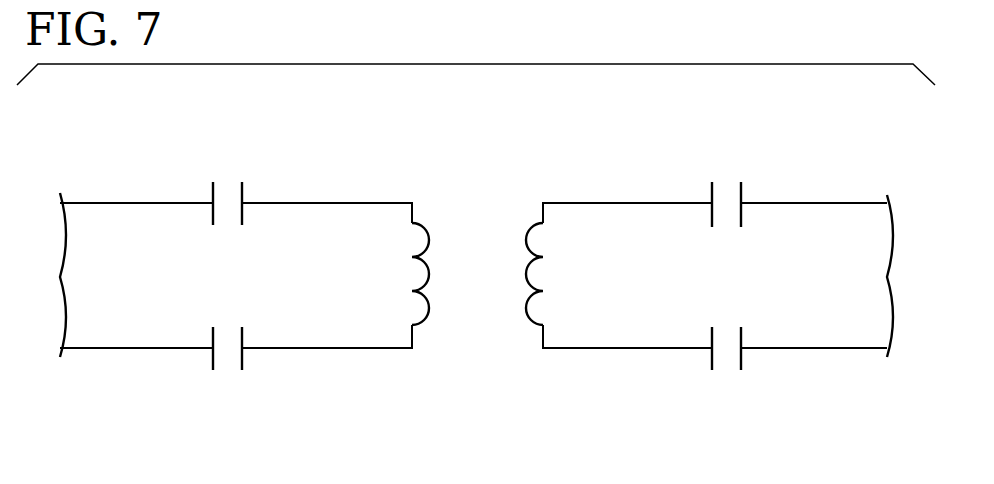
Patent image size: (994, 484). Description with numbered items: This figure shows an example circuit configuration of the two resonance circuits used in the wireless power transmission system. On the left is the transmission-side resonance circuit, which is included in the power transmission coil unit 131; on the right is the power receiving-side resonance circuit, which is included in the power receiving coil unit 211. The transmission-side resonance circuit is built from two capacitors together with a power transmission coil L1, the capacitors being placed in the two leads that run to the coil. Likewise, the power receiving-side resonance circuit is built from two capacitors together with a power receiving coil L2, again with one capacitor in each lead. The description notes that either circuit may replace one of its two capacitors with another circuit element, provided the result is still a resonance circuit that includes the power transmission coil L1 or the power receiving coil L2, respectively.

The power transmission coil unit 131 is at (303, 178).
The power receiving coil unit 211 is at (801, 178).
The power transmission coil L1 is at (400, 274).
The power receiving coil L2 is at (555, 274).